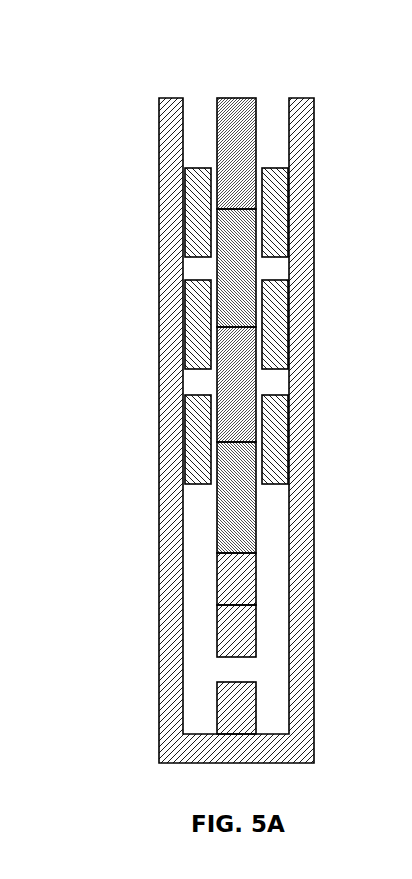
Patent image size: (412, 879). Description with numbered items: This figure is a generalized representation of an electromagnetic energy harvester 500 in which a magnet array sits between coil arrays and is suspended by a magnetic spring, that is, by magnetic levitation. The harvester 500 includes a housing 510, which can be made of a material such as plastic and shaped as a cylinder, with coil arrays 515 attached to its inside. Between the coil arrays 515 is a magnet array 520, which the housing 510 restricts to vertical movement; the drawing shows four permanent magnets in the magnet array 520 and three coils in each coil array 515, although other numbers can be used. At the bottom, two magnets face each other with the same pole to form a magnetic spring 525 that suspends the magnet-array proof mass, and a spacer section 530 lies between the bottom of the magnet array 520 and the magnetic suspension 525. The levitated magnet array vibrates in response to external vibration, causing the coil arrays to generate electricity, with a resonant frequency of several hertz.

The electromagnetic energy harvester 500 is at (116, 55).
The housing 510 is at (160, 205).
The coil arrays 515 is at (188, 306).
The magnet array 520 is at (217, 107).
The magnetic spring 525 is at (246, 668).
The spacer section 530 is at (255, 573).